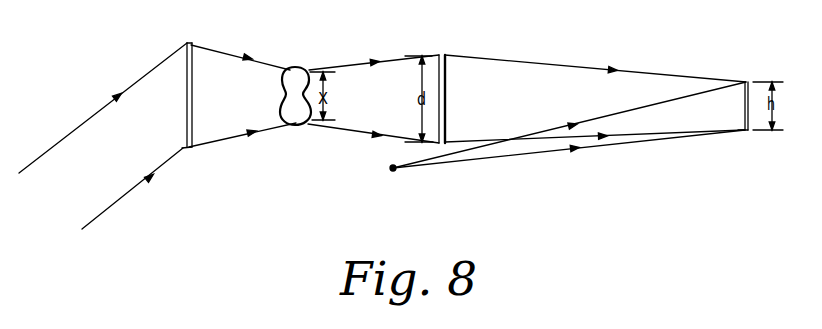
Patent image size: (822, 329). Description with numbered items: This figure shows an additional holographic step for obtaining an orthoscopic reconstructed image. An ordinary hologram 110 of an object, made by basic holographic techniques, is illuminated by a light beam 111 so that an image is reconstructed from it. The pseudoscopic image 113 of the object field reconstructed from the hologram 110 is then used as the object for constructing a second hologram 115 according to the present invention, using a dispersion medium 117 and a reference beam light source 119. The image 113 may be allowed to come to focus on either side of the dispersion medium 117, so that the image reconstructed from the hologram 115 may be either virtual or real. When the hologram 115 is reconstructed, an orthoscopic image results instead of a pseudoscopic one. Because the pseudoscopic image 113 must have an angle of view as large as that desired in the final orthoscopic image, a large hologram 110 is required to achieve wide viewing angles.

The hologram 110 is at (196, 48).
The light beam 111 is at (87, 133).
The pseudoscopic image 113 is at (297, 77).
The hologram 115 is at (748, 80).
The dispersion medium 117 is at (442, 55).
The reference beam light source 119 is at (395, 172).